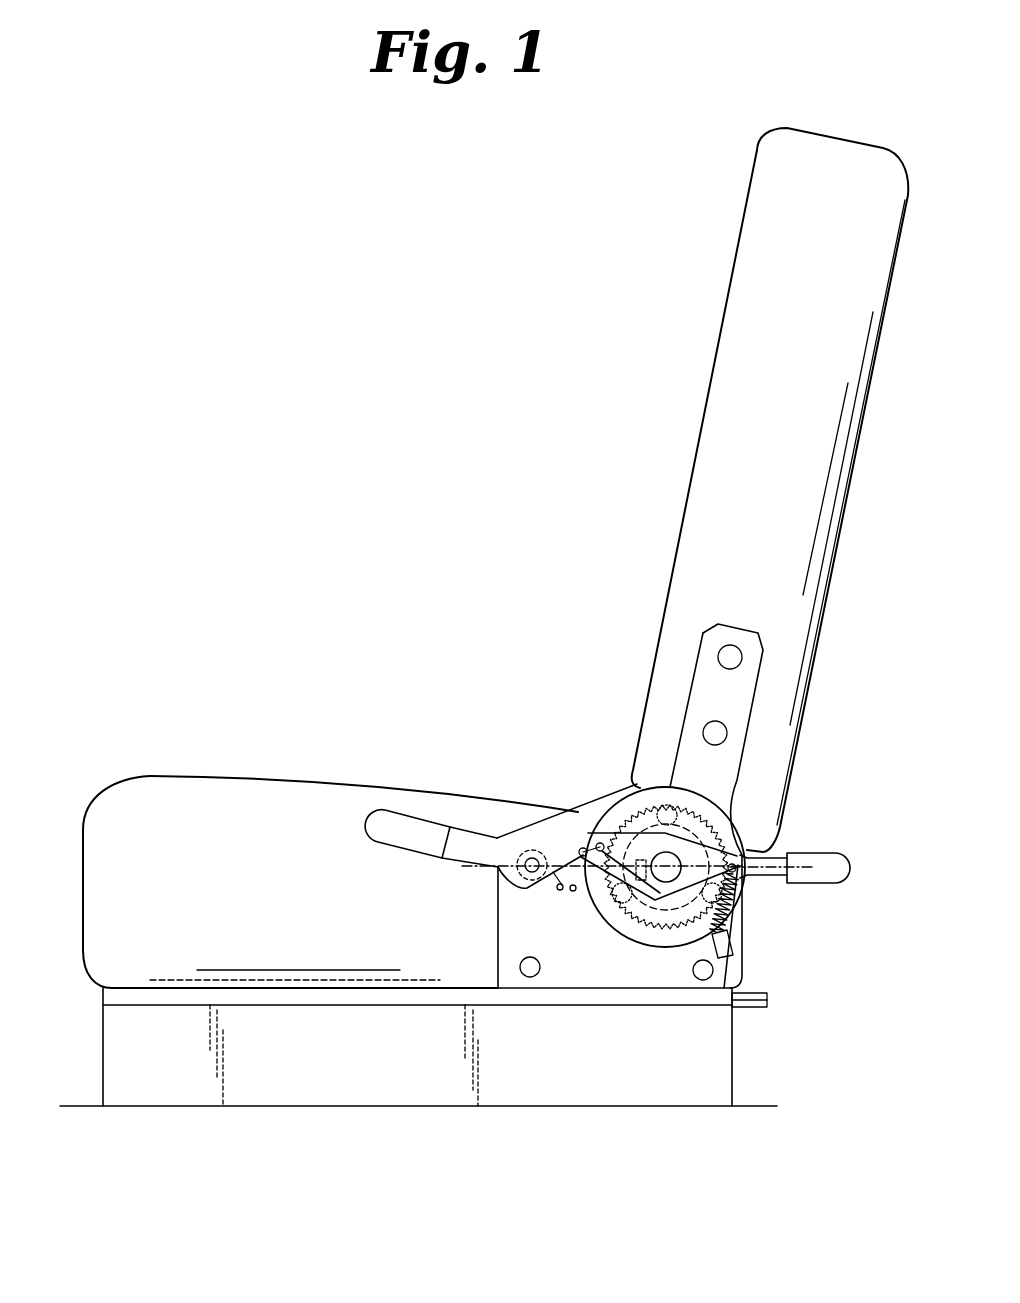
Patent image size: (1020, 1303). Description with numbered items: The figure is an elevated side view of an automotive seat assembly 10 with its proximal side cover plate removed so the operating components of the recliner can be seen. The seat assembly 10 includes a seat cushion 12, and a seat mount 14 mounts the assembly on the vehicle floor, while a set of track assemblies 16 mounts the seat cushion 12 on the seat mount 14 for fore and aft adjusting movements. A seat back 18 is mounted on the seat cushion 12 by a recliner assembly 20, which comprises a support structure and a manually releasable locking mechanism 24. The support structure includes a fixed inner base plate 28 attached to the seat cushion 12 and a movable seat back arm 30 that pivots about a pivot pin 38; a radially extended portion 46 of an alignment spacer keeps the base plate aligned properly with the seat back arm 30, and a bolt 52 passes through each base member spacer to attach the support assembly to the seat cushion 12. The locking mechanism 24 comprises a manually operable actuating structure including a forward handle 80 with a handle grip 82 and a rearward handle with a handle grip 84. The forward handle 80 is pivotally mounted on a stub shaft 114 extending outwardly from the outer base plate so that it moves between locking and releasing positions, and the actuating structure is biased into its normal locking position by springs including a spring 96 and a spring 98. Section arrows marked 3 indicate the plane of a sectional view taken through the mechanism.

The seat assembly 10 is at (424, 491).
The seat cushion 12 is at (211, 786).
The seat mount 14 is at (445, 1110).
The track assemblies 16 is at (681, 997).
The seat back 18 is at (735, 312).
The recliner assembly 20 is at (748, 809).
The locking mechanism 24 is at (668, 800).
The inner base plate 28 is at (515, 940).
The seat back arm 30 is at (743, 705).
The pivot pin 38 is at (662, 855).
The radially extended portion 46 is at (670, 893).
The bolt 52 is at (530, 978).
The forward handle 80 is at (552, 847).
The handle grip 82 is at (412, 843).
The handle grip 84 is at (817, 884).
The spring 96 is at (560, 890).
The spring 98 is at (743, 910).
The stub shaft 114 is at (527, 853).
The section line 3 is at (485, 856).